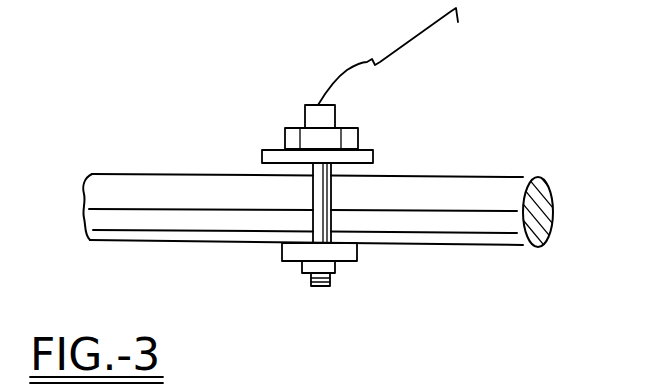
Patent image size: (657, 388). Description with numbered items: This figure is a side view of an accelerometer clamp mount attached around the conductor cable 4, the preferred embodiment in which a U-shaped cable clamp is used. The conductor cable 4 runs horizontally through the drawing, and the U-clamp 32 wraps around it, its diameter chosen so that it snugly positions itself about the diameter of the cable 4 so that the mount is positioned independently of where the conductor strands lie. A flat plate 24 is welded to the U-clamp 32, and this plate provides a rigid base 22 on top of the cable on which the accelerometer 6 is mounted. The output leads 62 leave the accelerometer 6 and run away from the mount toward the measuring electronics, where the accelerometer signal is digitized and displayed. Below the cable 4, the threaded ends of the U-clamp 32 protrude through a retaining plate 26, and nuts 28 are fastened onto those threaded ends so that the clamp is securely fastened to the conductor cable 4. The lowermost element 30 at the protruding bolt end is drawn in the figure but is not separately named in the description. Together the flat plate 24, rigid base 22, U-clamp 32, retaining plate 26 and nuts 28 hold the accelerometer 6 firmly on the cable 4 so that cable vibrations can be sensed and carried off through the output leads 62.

The conductor cable 4 is at (514, 177).
The accelerometer 6 is at (305, 113).
The rigid base 22 is at (285, 140).
The flat plate 24 is at (262, 154).
The retaining plate 26 is at (357, 255).
The nuts 28 is at (302, 266).
The bolt end 30 is at (330, 282).
The U-clamp 32 is at (330, 197).
The output leads 62 is at (347, 70).